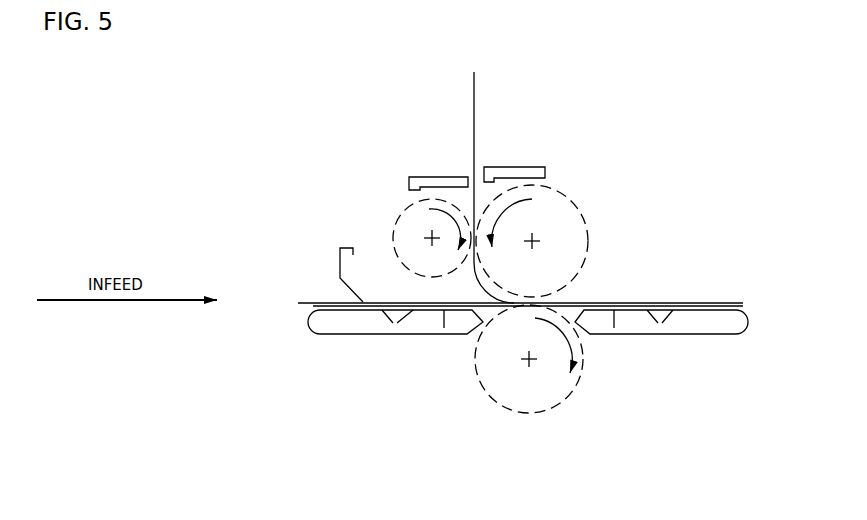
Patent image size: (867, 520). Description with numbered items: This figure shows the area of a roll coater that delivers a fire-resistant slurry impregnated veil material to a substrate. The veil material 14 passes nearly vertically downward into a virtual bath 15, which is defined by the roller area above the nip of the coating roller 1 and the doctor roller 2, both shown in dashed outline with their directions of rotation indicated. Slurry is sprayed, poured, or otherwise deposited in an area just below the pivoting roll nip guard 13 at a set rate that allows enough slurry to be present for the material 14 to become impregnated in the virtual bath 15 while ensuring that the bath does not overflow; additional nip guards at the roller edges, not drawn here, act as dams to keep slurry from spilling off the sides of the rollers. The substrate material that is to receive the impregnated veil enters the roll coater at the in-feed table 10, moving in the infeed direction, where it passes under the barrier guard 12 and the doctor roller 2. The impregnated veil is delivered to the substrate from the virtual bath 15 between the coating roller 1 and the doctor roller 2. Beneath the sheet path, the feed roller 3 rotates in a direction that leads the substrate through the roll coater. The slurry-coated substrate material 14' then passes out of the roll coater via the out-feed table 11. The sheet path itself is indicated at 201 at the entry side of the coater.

The coating roller 1 is at (553, 183).
The doctor roller 2 is at (402, 200).
The feed roller 3 is at (570, 403).
The in-feed table 10 is at (337, 336).
The out-feed table 11 is at (710, 337).
The barrier guard 12 is at (343, 240).
The pivoting roll nip guard 13 is at (458, 176).
The material 14 is at (499, 168).
The slurry-coated substrate material 14' is at (628, 206).
The virtual bath 15 is at (459, 199).
The sheet 201 is at (323, 300).